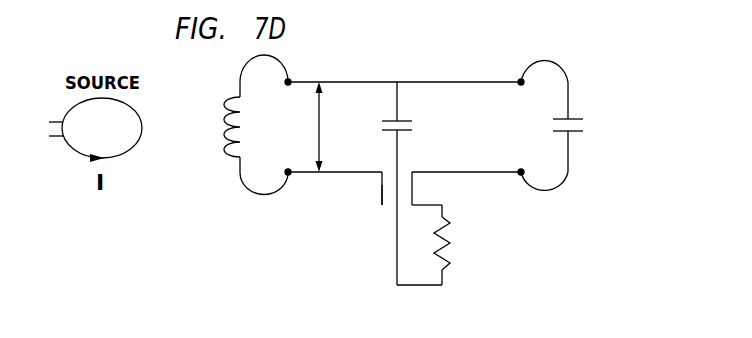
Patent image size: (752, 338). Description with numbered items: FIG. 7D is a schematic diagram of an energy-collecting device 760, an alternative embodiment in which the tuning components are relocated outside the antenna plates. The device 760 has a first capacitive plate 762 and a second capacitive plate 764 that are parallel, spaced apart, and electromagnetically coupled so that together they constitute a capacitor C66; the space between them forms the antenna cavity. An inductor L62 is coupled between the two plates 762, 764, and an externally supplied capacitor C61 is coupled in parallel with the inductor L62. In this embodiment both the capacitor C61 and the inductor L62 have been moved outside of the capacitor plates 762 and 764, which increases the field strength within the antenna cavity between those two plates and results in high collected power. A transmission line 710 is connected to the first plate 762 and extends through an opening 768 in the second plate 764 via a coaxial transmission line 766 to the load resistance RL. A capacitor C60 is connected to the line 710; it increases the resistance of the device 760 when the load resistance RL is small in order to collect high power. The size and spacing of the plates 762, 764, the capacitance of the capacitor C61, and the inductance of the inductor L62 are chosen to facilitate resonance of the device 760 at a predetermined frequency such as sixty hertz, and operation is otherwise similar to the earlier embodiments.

The device 760 is at (567, 42).
The first capacitive plate 762 is at (420, 82).
The second capacitive plate 764 is at (308, 175).
The coaxial transmission line 766 is at (382, 183).
The opening 768 is at (402, 173).
The transmission line 710 is at (395, 254).
The inductor L62 is at (230, 124).
The capacitor C60 is at (412, 183).
The capacitor C61 is at (577, 125).
The capacitor C66 is at (318, 127).
The load resistance RL is at (459, 245).